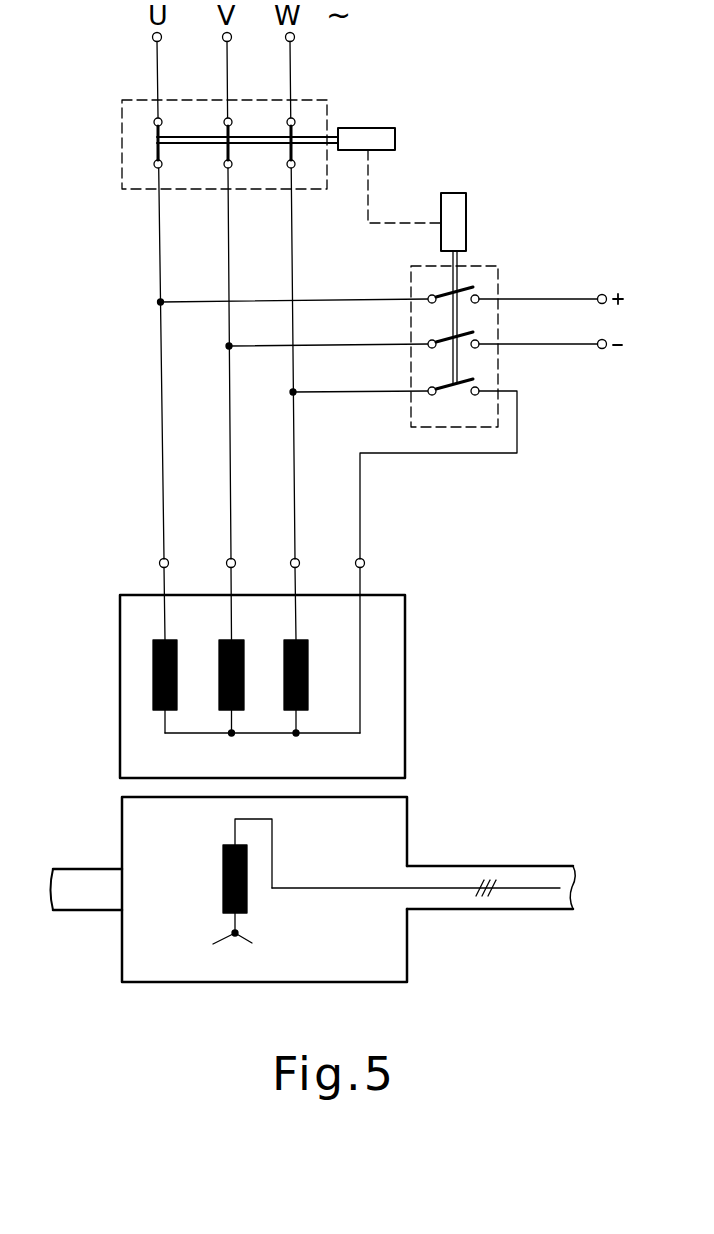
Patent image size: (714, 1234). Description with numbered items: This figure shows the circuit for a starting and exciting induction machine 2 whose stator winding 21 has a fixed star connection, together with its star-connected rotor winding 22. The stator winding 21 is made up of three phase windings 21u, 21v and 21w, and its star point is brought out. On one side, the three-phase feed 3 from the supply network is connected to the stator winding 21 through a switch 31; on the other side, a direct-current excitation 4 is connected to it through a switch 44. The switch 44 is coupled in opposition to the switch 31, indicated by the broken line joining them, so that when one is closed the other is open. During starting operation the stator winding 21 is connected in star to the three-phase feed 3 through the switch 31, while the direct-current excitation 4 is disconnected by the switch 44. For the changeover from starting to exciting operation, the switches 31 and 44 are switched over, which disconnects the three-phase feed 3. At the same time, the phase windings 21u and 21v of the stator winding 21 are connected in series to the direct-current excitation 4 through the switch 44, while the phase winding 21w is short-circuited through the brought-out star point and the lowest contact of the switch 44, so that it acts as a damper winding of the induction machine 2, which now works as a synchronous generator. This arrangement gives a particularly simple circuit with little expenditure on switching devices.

The starting and exciting induction machine 2 is at (72, 838).
The three-phase feed 3 is at (199, 27).
The switch 31 is at (368, 111).
The direct-current excitation 4 is at (662, 333).
The switch 44 is at (521, 244).
The stator winding 21 is at (392, 645).
The phase winding 21u is at (176, 652).
The phase winding 21v is at (243, 652).
The phase winding 21w is at (306, 652).
The rotor winding 22 is at (222, 880).